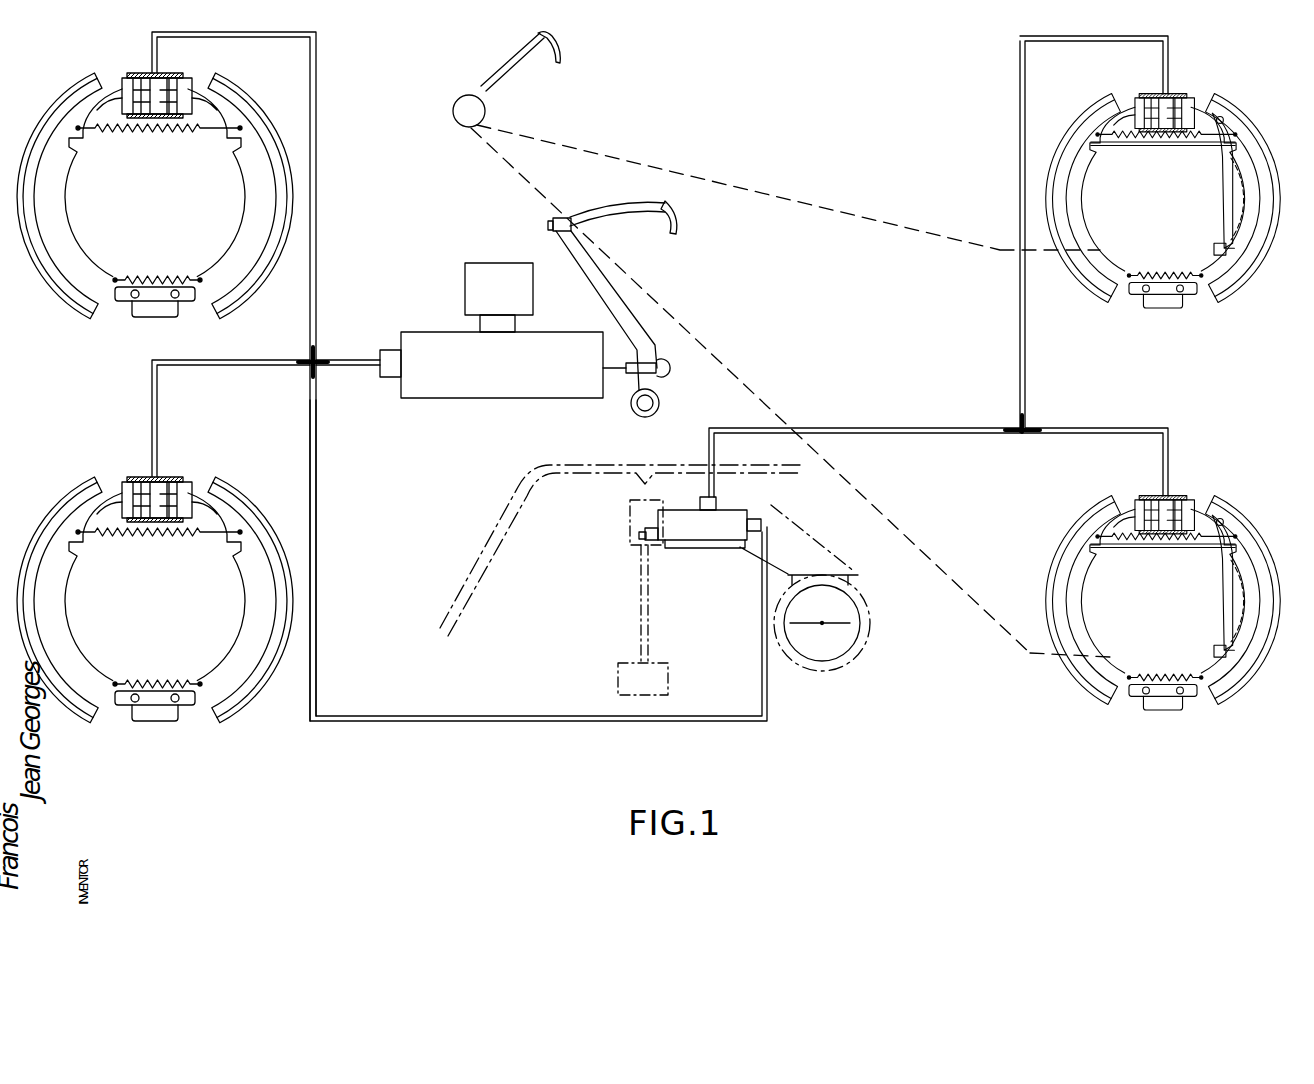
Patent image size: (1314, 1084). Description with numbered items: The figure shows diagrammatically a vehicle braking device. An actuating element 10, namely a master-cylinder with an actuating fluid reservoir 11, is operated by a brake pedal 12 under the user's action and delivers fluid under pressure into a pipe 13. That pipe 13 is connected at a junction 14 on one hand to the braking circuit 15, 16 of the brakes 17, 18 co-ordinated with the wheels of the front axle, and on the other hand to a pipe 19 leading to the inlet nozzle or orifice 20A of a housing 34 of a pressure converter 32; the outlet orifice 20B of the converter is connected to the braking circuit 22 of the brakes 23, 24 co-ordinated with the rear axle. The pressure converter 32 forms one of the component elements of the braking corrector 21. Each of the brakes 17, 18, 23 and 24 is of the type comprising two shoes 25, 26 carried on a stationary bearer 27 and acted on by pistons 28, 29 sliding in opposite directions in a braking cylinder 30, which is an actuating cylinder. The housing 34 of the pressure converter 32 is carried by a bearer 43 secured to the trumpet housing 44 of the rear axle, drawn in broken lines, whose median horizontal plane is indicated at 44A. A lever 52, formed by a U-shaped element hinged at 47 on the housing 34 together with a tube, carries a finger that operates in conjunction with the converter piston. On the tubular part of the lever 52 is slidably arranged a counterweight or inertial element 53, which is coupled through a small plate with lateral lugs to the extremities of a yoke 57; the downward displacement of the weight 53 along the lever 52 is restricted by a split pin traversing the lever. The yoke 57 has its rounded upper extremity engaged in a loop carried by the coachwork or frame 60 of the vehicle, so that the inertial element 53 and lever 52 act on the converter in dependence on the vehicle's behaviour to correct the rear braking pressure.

The actuating element 10 is at (514, 377).
The actuating fluid reservoir 11 is at (461, 282).
The brake pedal 12 is at (592, 216).
The pipe 13 is at (346, 361).
The connection 14 is at (304, 370).
The braking circuit 15 is at (313, 222).
The braking circuit 16 is at (226, 360).
The brake 17 is at (251, 92).
The brake 18 is at (252, 495).
The pipe 19 is at (313, 440).
The inlet nozzle or orifice 20A is at (760, 519).
The outlet orifice 20B is at (700, 498).
The braking corrector 21 is at (701, 563).
The braking circuit 22 is at (873, 426).
The brake 23 is at (1254, 114).
The brake 24 is at (1253, 519).
The shoe 25 is at (47, 124).
The shoe 26 is at (270, 140).
The stationary bearer 27 is at (150, 307).
The piston 28 is at (122, 84).
The piston 29 is at (176, 83).
The braking cylinder 30 is at (140, 75).
The pressure converter 32 is at (731, 507).
The housing 34 is at (737, 532).
The bearer 43 is at (833, 570).
The trumpet housing 44 is at (847, 646).
The median horizontal plane 44A is at (849, 626).
The hinge 47 is at (643, 537).
The lever 52 is at (641, 615).
The counterweight or inertial element 53 is at (618, 679).
The yoke 57 is at (641, 586).
The coachwork or frame 60 is at (531, 505).